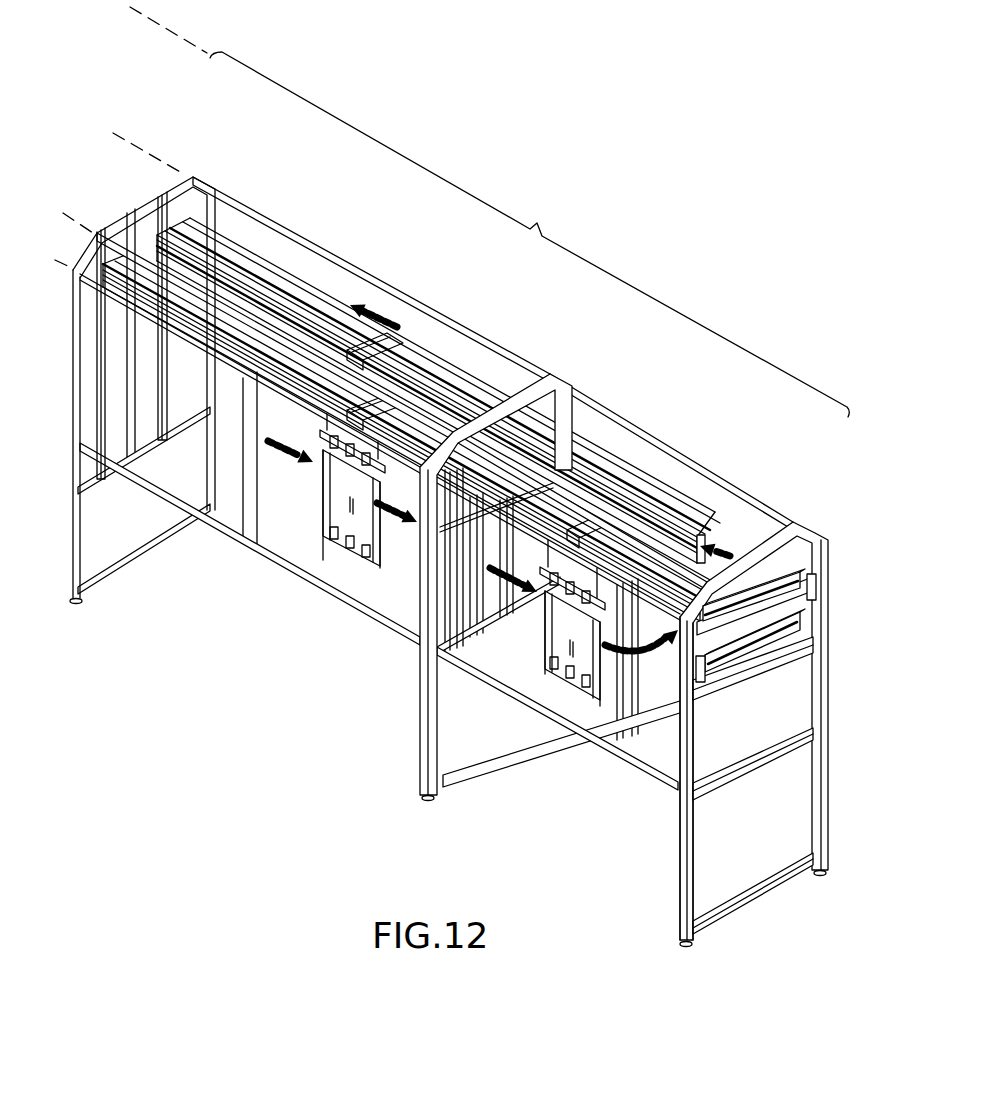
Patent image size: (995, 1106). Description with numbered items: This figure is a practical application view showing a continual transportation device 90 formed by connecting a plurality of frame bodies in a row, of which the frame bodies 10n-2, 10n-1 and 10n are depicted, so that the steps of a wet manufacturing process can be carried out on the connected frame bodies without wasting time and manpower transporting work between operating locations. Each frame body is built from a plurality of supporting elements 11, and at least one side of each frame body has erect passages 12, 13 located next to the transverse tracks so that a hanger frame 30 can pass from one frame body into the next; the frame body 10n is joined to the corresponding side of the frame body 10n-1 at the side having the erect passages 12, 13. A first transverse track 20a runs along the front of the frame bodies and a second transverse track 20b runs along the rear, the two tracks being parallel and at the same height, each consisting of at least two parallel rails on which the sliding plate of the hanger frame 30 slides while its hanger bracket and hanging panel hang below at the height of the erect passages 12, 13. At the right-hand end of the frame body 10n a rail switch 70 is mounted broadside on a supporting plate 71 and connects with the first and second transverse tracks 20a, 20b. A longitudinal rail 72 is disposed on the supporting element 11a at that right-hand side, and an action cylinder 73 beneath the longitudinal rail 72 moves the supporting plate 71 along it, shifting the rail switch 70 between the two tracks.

The frame body 10n-2 is at (178, 158).
The frame body 10n-1 is at (508, 345).
The frame body 10n is at (646, 452).
The supporting elements 11 is at (73, 345).
The supporting element 11a is at (683, 860).
The erect passage 12 is at (87, 398).
The erect passage 13 is at (150, 378).
The first transverse track 20a is at (243, 337).
The second transverse track 20b is at (322, 327).
The hanger frame 30 is at (413, 335).
The rail switch 70 is at (687, 537).
The supporting plate 71 is at (740, 580).
The longitudinal rail 72 is at (793, 580).
The action cylinder 73 is at (818, 550).
The continual transportation device 90 is at (489, 212).